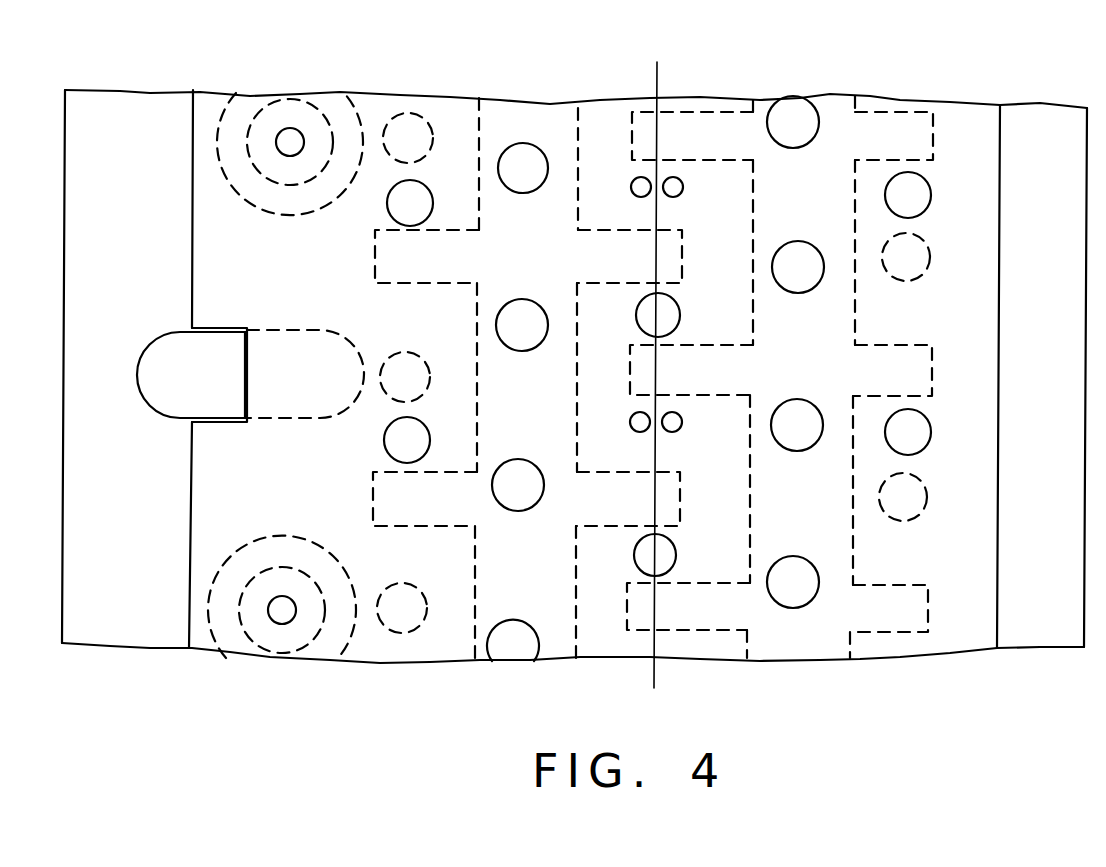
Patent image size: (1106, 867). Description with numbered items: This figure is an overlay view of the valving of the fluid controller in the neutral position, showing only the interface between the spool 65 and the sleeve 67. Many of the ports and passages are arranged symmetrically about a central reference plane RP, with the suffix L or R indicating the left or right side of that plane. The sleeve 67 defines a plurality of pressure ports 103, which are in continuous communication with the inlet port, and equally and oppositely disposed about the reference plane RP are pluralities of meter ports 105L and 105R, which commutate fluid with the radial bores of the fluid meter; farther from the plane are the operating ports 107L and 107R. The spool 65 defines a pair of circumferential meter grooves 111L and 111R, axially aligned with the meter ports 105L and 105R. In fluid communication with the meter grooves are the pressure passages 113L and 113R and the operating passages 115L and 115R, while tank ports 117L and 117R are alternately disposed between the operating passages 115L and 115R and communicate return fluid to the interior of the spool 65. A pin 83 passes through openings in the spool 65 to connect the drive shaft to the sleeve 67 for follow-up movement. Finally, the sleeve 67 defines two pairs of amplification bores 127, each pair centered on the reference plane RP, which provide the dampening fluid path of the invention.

The spool 65 is at (155, 112).
The sleeve 67 is at (205, 112).
The pin 83 is at (283, 152).
The pressure ports 103 is at (640, 325).
The meter ports 105L is at (532, 147).
The meter ports 105R is at (802, 560).
The operating ports 107L is at (396, 220).
The operating ports 107R is at (928, 204).
The circumferential meter groove 111L is at (526, 379).
The circumferential meter groove 111R is at (801, 377).
The pressure passages 113L is at (618, 258).
The pressure passages 113R is at (665, 140).
The operating passages 115L is at (395, 265).
The operating passages 115R is at (945, 145).
The tank ports 117L is at (400, 128).
The tank ports 117R is at (915, 270).
The amplification bores 127 is at (645, 197).
The central reference plane RP is at (657, 80).